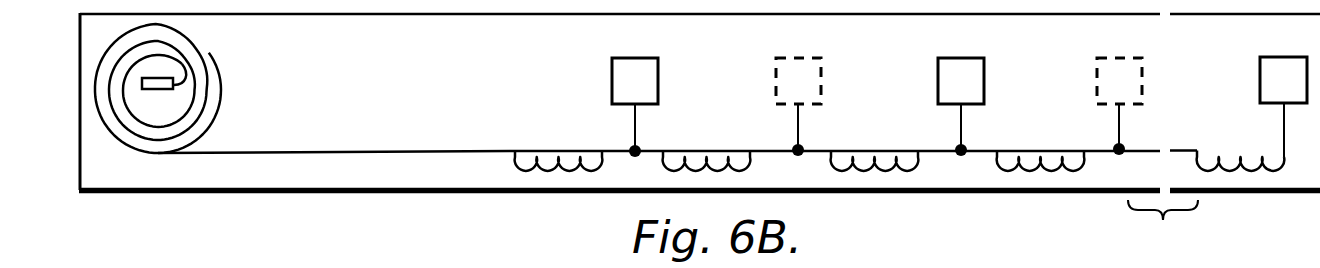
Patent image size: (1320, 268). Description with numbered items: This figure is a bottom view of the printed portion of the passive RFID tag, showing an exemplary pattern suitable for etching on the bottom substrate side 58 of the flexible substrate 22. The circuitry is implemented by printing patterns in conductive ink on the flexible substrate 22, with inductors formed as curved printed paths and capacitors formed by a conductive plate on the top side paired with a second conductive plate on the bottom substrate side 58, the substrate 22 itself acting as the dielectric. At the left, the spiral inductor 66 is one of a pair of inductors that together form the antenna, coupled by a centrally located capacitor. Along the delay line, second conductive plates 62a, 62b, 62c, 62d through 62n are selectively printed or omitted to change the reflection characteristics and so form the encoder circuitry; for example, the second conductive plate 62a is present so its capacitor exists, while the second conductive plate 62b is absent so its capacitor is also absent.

The flexible substrate 22 is at (392, 191).
The bottom substrate side 58 is at (260, 175).
The inductor 66 is at (223, 67).
The second conductive plate 62a is at (612, 80).
The second conductive plate 62b is at (776, 80).
The second conductive plate 62c is at (938, 76).
The second conductive plate 62d is at (1097, 80).
The second conductive plate 62n is at (1260, 78).